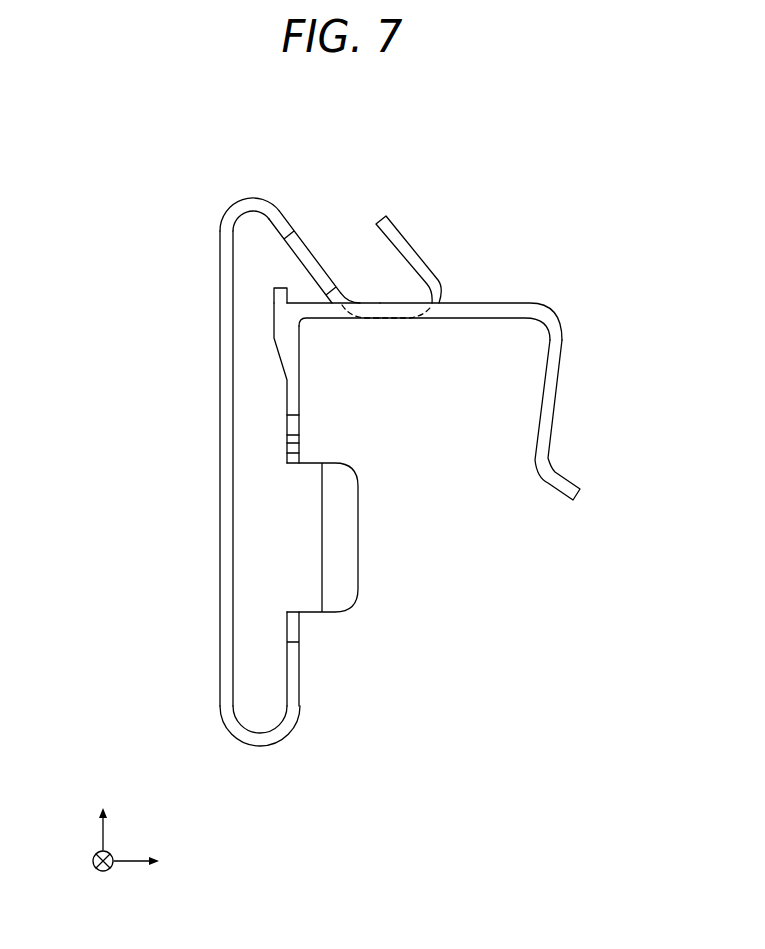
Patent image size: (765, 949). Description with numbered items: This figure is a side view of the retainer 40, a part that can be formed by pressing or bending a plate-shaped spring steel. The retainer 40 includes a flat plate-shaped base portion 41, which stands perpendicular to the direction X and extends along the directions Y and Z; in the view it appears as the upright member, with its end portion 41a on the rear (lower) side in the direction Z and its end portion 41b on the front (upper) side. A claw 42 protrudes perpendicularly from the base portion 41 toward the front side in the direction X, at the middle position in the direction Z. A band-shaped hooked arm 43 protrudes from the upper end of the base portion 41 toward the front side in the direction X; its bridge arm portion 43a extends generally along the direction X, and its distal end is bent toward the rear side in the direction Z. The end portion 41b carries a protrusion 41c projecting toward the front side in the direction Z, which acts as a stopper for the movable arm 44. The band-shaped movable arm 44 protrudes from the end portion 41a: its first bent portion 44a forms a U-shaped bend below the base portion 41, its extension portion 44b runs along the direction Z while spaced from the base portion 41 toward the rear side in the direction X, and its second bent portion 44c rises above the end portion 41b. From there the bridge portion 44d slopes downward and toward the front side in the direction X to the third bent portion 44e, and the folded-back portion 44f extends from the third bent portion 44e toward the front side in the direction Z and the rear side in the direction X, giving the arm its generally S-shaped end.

The retainer 40 is at (598, 182).
The base portion 41 is at (308, 661).
The end portion 41a is at (300, 708).
The end portion 41b is at (299, 380).
The protrusion 41c is at (280, 298).
The claw 42 is at (345, 533).
The hooked arm 43 is at (556, 308).
The bridge arm portion 43a is at (508, 315).
The movable arm 44 is at (219, 220).
The first bent portion 44a is at (262, 748).
The extension portion 44b is at (226, 545).
The second bent portion 44c is at (257, 197).
The bridge portion 44d is at (317, 268).
The third bent portion 44e is at (447, 301).
The folded-back portion 44f is at (415, 252).